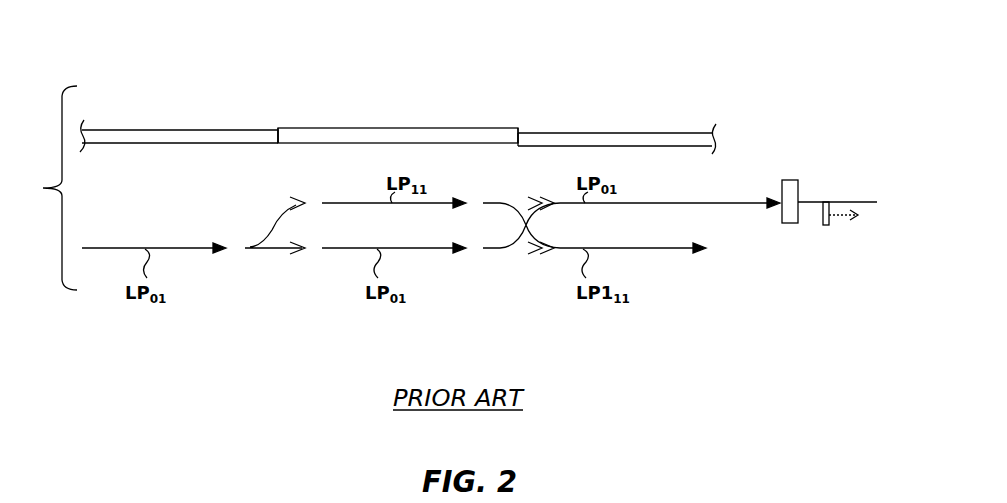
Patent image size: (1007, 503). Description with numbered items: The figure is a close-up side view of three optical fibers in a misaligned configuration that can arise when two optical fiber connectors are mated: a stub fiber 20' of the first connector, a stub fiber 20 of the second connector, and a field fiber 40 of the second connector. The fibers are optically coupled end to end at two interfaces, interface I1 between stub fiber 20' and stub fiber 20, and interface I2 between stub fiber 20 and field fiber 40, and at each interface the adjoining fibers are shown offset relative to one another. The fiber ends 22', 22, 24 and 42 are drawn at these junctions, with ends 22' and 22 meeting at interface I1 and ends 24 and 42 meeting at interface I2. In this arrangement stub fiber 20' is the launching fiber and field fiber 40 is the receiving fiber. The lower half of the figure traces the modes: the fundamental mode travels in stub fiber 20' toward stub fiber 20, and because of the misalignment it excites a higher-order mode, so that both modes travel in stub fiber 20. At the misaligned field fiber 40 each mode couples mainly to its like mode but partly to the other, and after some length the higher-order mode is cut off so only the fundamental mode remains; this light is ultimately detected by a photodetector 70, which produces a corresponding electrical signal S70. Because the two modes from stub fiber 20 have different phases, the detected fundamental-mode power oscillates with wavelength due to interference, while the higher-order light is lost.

The stub fiber 20' is at (179, 110).
The stub fiber 20 is at (398, 103).
The first end of fiber 20 22 is at (301, 117).
The end of input fiber 22' is at (264, 159).
The second end of fiber 20 24 is at (518, 128).
The field fiber 40 is at (630, 133).
The end of output fiber 42 is at (510, 145).
The photodetector 70 is at (788, 224).
The electrical signal S70 is at (823, 224).
The interface I1 is at (276, 106).
The interface I2 is at (522, 114).